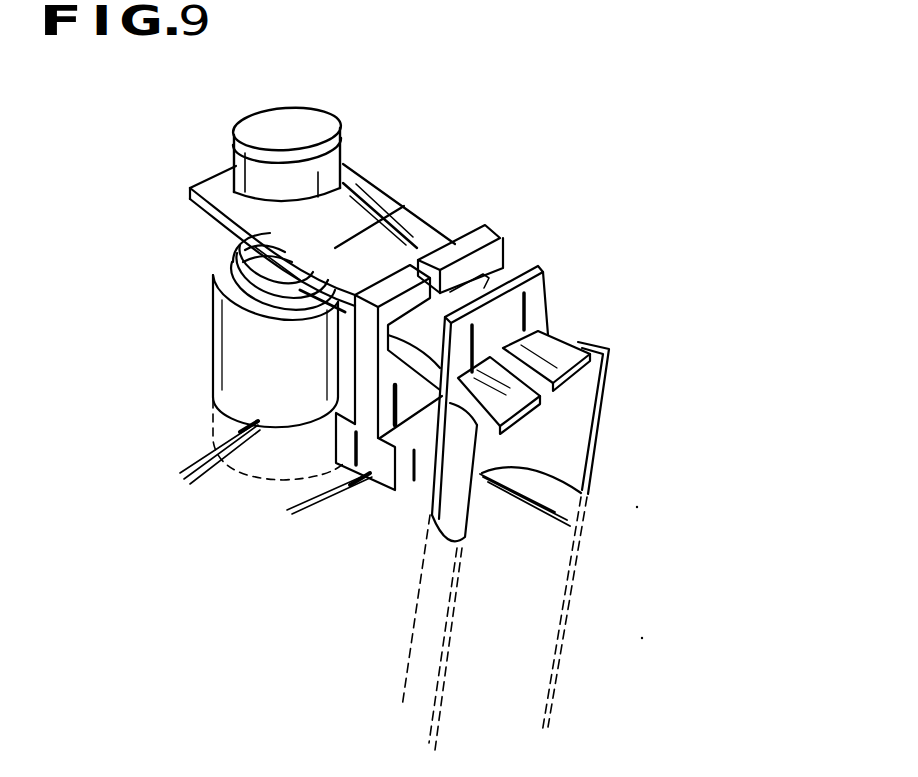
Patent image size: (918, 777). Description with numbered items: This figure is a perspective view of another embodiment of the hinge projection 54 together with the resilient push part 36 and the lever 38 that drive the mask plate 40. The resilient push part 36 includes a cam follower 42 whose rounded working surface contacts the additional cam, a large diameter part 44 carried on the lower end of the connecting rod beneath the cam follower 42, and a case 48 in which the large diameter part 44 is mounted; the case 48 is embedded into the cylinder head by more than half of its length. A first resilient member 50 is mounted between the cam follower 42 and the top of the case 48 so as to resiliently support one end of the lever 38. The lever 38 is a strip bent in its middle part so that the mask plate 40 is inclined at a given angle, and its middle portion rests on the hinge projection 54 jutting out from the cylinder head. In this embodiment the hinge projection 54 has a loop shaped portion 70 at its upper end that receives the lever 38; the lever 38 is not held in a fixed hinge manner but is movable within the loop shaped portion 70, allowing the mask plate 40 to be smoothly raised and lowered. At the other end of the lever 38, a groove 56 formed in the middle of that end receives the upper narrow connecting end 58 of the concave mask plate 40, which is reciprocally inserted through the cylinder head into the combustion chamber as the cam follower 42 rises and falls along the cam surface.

The resilient push part 36 is at (181, 183).
The lever 38 is at (418, 222).
The mask plate 40 is at (573, 443).
The cam follower 42 is at (296, 147).
The large diameter part 44 is at (230, 260).
The case 48 is at (237, 352).
The first resilient member 50 is at (212, 296).
The hinge projection 54 is at (356, 392).
The groove 56 is at (567, 343).
The upper narrow connecting end 58 is at (537, 332).
The loop shaped portion 70 is at (462, 243).